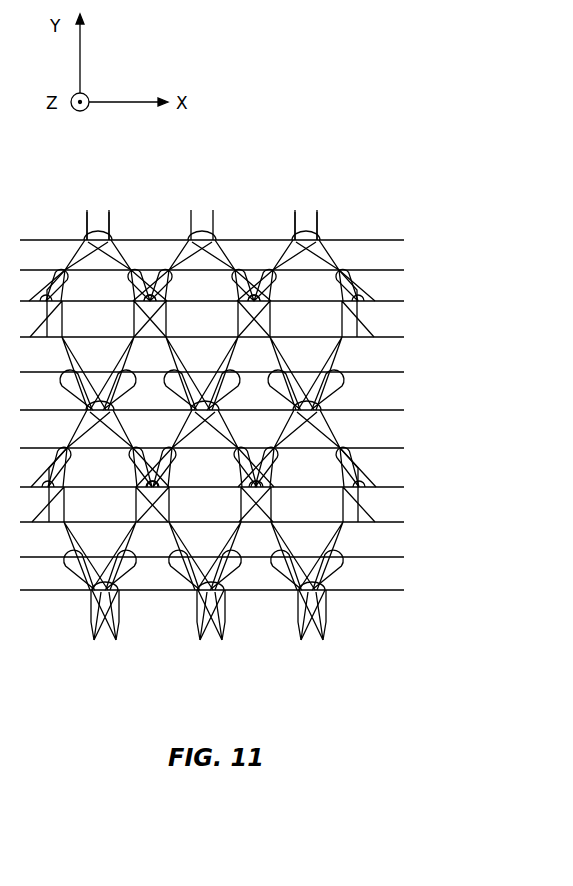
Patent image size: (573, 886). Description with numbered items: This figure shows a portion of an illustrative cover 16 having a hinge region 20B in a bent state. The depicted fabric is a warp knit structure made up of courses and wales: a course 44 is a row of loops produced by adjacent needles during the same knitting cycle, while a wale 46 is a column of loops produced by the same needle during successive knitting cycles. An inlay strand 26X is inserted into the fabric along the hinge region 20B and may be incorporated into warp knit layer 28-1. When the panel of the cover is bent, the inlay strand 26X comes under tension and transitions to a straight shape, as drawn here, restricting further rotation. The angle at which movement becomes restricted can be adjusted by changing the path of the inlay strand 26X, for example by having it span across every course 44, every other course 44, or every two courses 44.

The cover 16 is at (258, 122).
The hinge region 20B is at (403, 645).
The inlay strand 26X is at (386, 590).
The course 44 is at (423, 238).
The wale 46 is at (149, 193).
The warp knit layer 28-1 is at (296, 212).